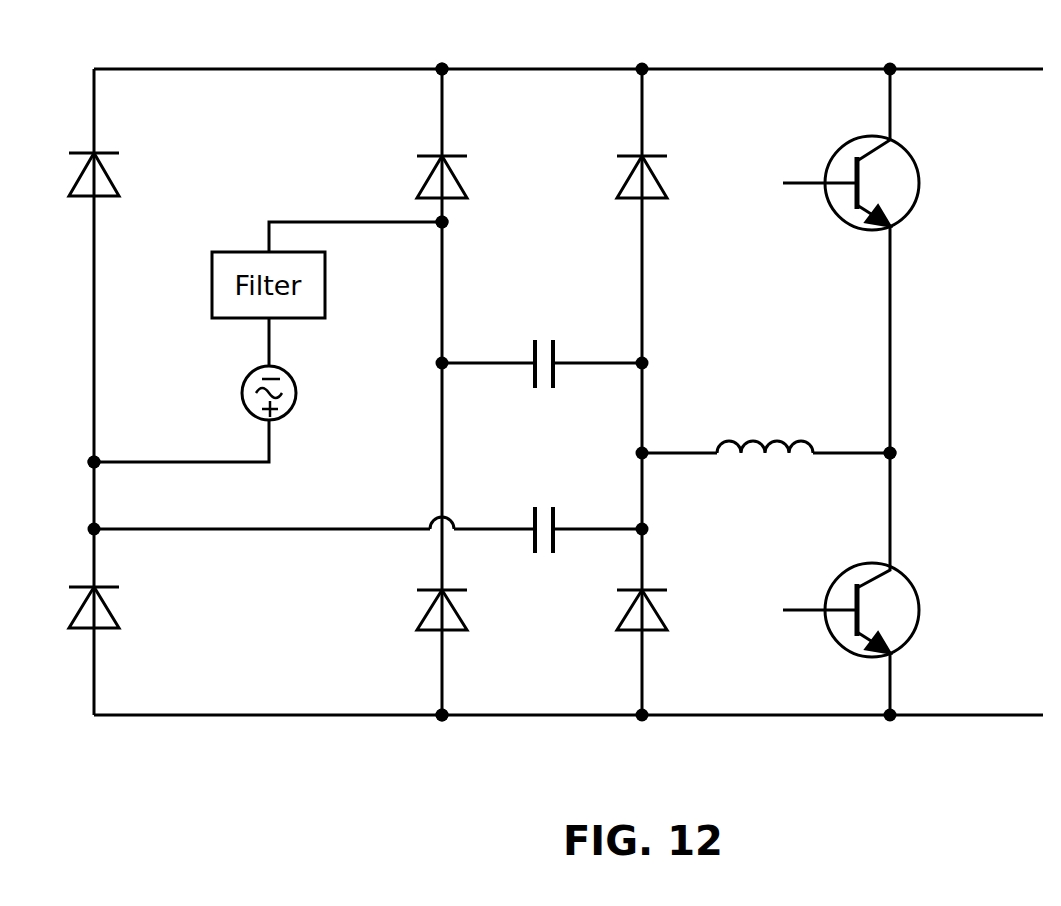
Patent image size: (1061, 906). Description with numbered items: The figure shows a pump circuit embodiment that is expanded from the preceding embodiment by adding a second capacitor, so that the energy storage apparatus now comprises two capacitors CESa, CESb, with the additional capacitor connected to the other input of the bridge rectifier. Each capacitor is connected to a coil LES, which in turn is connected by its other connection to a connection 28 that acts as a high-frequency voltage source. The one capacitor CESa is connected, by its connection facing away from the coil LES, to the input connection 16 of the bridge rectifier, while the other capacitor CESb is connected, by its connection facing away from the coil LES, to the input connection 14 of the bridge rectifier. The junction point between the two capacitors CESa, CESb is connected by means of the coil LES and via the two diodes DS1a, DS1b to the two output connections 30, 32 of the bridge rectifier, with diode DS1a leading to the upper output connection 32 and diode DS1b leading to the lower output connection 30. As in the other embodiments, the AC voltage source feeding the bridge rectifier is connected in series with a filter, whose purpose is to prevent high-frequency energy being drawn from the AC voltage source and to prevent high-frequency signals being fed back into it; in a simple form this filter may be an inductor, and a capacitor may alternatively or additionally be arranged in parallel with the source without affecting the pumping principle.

The input connection 14 is at (74, 462).
The input connection 16 is at (425, 238).
The connection 28 is at (872, 470).
The output connection 30 is at (442, 736).
The output connection 32 is at (444, 48).
The diode DS1a is at (683, 177).
The diode DS1b is at (683, 610).
The capacitor CESa is at (542, 342).
The capacitor CESb is at (368, 507).
The coil LES is at (766, 420).